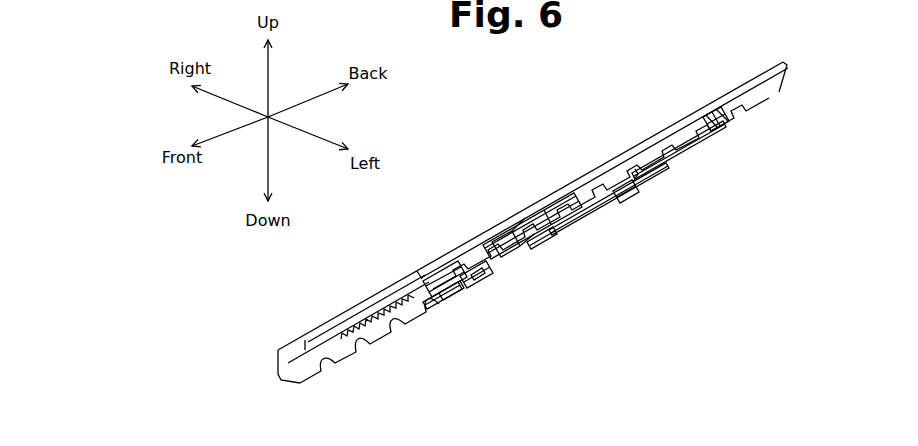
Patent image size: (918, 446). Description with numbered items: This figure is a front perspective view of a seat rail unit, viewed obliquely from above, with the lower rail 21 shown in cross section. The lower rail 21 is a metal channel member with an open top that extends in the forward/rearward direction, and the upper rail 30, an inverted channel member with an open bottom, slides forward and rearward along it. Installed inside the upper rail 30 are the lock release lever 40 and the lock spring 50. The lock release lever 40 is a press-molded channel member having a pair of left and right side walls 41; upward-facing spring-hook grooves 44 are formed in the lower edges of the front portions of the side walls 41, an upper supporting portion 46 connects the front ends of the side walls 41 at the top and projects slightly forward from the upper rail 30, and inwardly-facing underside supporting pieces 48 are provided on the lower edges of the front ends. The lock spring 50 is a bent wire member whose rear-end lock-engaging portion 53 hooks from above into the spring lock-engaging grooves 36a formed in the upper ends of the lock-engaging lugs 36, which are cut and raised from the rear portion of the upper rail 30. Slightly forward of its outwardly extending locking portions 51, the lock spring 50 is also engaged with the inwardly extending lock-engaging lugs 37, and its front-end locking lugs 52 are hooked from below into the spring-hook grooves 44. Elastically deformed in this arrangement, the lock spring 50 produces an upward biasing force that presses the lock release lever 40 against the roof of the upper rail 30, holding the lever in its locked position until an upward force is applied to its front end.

The lower rail 21 is at (307, 333).
The upper rail 30 is at (675, 122).
The lock-engaging lug 36 is at (723, 117).
The spring lock-engaging groove 36a is at (710, 113).
The lock-engaging lug 37 is at (543, 240).
The lock release lever 40 is at (537, 202).
The side wall 41 is at (507, 227).
The spring-hook groove 44 is at (478, 280).
The upper supporting portion 46 is at (413, 273).
The underside supporting piece 48 is at (433, 307).
The lock spring 50 is at (572, 223).
The locking portion 51 is at (628, 188).
The front-end locking lug 52 is at (482, 278).
The rear-end lock-engaging portion 53 is at (722, 122).